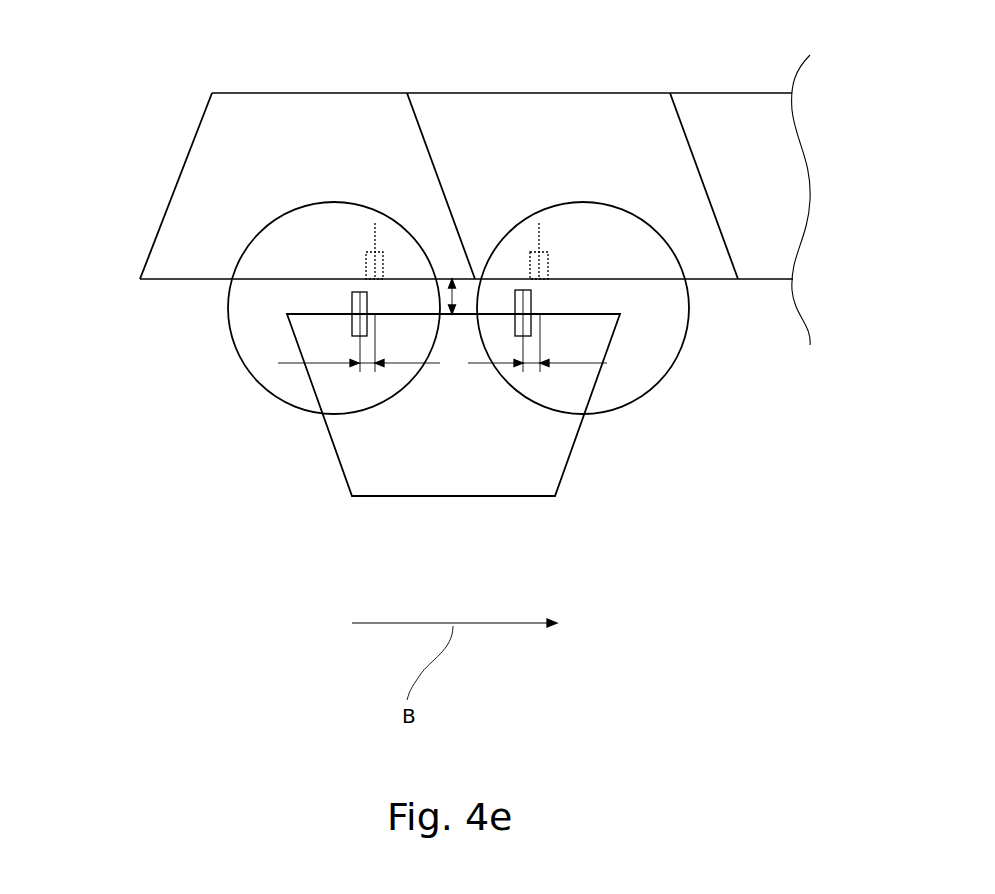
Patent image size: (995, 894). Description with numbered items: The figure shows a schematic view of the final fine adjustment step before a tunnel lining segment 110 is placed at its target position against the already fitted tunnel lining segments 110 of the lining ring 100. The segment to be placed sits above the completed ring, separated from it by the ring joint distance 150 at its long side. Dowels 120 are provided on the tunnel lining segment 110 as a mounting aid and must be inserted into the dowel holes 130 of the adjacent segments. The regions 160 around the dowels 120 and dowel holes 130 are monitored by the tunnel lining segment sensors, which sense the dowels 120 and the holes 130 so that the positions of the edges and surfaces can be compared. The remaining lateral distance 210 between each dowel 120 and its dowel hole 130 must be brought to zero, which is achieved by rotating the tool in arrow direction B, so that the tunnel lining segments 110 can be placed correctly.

The lining ring 100 is at (126, 184).
The tunnel lining segment 110 is at (321, 184).
The dowel 120 is at (352, 300).
The dowel hole 130 is at (366, 257).
The ring joint distance 150 is at (458, 300).
The region 160 is at (348, 202).
The distance 210 is at (360, 372).